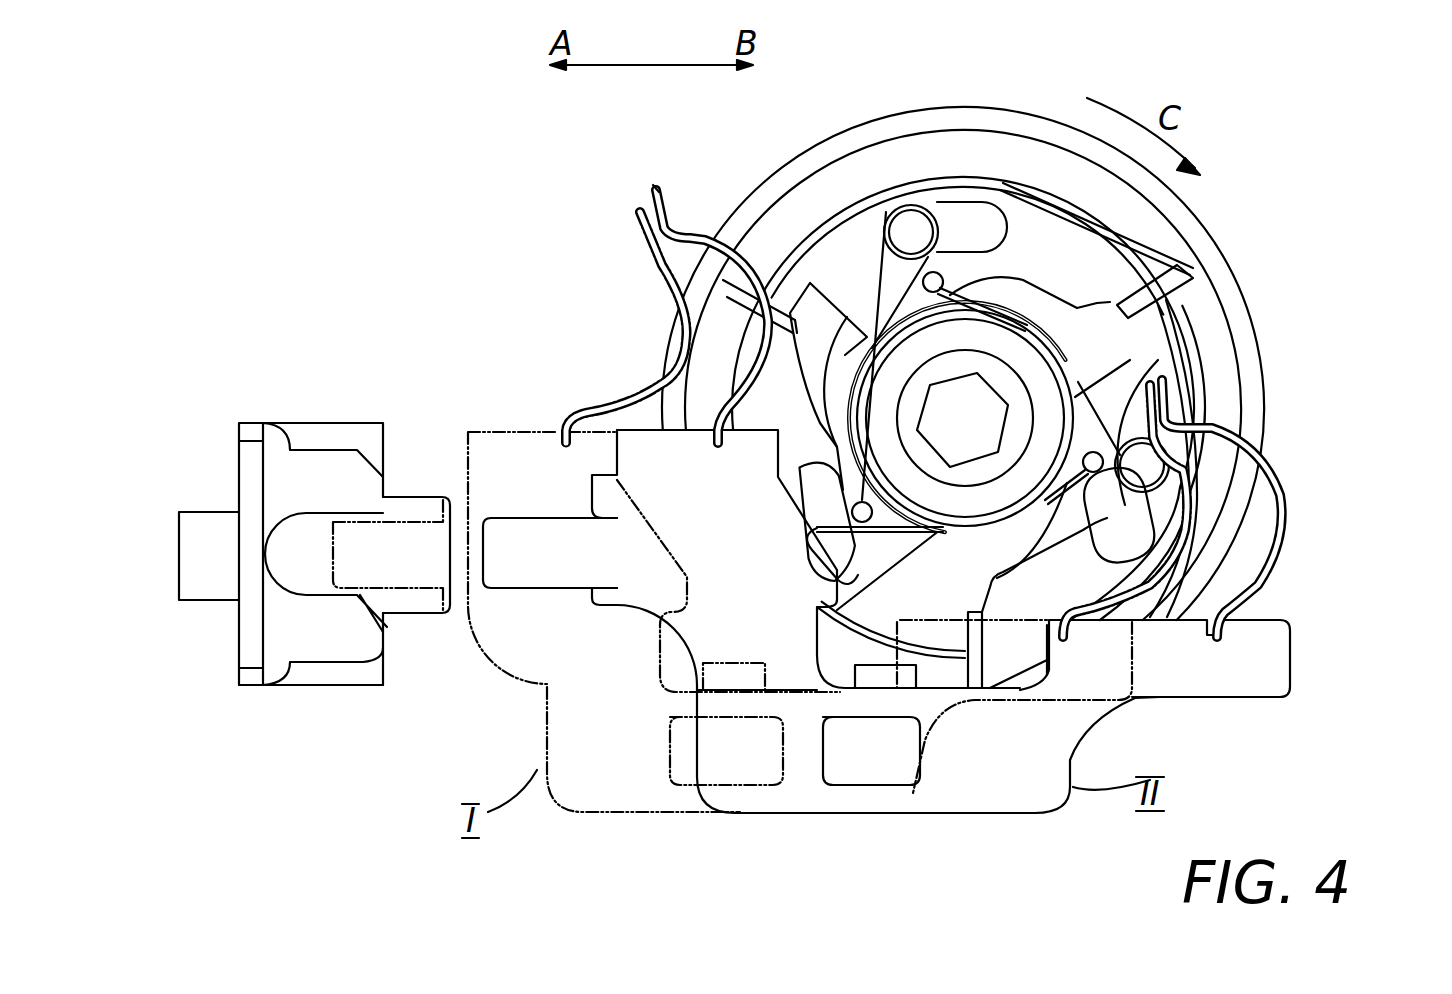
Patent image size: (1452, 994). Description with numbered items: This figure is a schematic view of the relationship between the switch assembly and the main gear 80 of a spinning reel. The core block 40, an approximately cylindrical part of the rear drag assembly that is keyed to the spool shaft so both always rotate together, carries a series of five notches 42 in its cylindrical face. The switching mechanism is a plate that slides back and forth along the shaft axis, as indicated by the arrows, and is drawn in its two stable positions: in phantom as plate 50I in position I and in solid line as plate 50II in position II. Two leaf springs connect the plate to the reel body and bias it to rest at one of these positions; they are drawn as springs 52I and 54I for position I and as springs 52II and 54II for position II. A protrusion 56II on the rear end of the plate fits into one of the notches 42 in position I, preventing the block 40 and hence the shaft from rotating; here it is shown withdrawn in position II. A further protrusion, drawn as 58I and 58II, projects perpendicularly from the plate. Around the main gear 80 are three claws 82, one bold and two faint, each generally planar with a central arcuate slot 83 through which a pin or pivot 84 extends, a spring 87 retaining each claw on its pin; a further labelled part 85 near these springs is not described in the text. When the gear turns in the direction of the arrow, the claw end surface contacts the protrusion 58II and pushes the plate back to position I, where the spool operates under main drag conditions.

The core block 40 is at (292, 697).
The notches 42 is at (300, 535).
The plate (position I) 50I is at (585, 812).
The plate (position II) 50II is at (1015, 800).
The leaf spring (position I) 52I is at (1187, 553).
The leaf spring (position II) 52II is at (1232, 505).
The leaf spring (position I) 54I is at (587, 273).
The leaf spring (position II) 54II is at (692, 237).
The protrusion (position II) 56II is at (520, 545).
The protrusion (position I) 58I is at (737, 680).
The protrusion (position II) 58II is at (903, 680).
The main gear 80 is at (986, 434).
The claws 82 is at (1033, 222).
The arcuate slot 83 is at (943, 205).
The pin or pivot 84 is at (1200, 270).
The spring coil 85 is at (903, 227).
The spring 87 is at (975, 177).